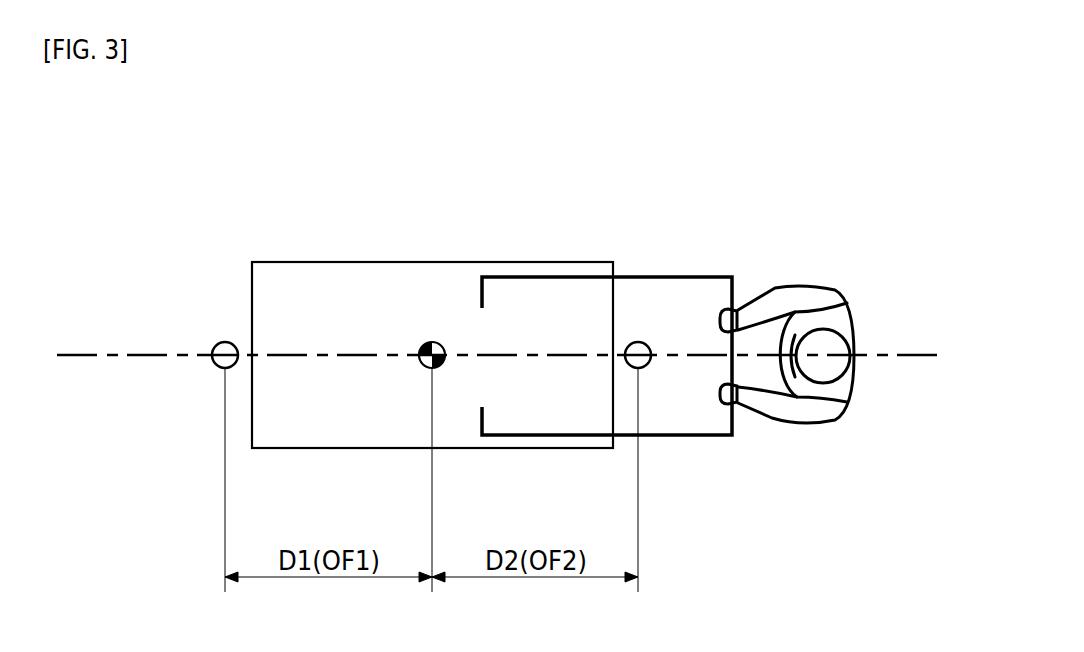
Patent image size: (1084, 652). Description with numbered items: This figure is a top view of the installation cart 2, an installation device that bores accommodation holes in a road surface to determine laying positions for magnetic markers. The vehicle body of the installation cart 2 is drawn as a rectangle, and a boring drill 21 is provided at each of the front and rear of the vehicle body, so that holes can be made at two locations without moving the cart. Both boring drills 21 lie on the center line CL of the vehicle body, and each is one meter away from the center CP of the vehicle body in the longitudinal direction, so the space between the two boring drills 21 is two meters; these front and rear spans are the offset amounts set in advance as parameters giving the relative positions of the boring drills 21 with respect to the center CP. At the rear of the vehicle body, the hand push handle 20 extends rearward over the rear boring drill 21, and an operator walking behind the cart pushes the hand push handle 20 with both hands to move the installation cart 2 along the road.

The installation cart 2 is at (585, 236).
The hand push handle 20 is at (682, 277).
The boring drill 21 is at (217, 365).
The center CP is at (429, 343).
The center line CL is at (905, 355).